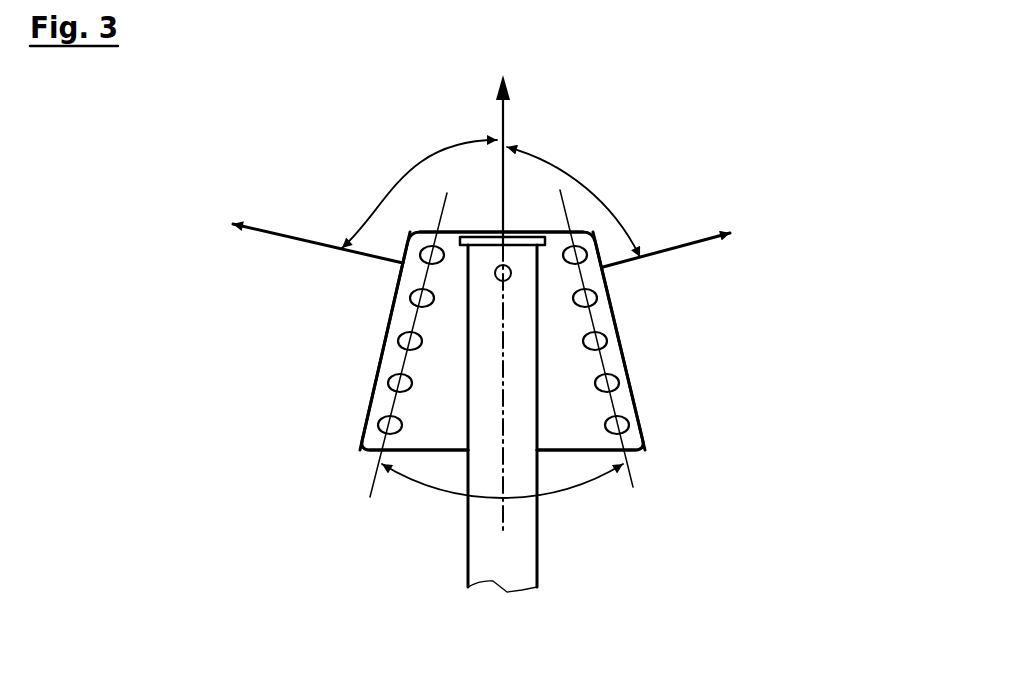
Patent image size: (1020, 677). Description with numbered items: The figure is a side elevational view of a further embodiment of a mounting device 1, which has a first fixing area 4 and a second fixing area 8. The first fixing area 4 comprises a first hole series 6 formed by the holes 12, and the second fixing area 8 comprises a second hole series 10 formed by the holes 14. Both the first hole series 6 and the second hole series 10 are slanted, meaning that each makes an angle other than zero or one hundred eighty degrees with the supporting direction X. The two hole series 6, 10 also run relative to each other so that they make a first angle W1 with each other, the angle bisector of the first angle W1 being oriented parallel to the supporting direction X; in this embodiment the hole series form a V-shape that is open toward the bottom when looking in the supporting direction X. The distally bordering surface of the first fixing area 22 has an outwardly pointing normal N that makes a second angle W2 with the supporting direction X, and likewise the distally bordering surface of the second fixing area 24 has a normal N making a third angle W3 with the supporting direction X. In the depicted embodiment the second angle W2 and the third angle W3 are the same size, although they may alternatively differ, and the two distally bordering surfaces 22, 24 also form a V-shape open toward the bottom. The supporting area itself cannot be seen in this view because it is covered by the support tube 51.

The mounting device 1 is at (292, 200).
The first fixing area 4 is at (400, 322).
The first hole series 6 is at (375, 483).
The second fixing area 8 is at (600, 312).
The second hole series 10 is at (632, 475).
The holes 12 is at (395, 296).
The holes 14 is at (625, 423).
The distally bordering surface of the first fixing area 22 is at (375, 367).
The distally bordering surface of the second fixing area 24 is at (617, 363).
The support tube 51 is at (480, 564).
The supporting direction X is at (503, 120).
The normal N is at (282, 237).
The first angle W1 is at (573, 490).
The second angle W2 is at (405, 171).
The third angle W3 is at (577, 180).